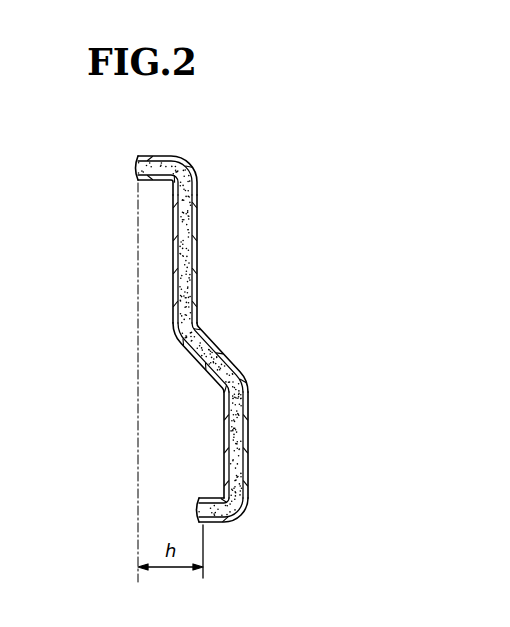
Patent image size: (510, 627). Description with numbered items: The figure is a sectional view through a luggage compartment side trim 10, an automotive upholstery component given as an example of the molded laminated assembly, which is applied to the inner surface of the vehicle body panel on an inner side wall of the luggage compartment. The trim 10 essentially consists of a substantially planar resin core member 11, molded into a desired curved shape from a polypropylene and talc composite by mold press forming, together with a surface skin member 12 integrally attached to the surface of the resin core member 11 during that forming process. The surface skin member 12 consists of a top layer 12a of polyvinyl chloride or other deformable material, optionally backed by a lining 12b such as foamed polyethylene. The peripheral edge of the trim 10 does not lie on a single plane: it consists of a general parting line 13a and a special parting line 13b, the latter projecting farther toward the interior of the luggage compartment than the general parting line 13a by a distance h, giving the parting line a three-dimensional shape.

The luggage compartment side trim 10 is at (227, 351).
The resin core member 11 is at (173, 343).
The surface skin member 12 is at (295, 410).
The top layer 12a is at (241, 377).
The lining 12b is at (245, 417).
The general parting line 13a is at (138, 164).
The special parting line 13b is at (228, 524).